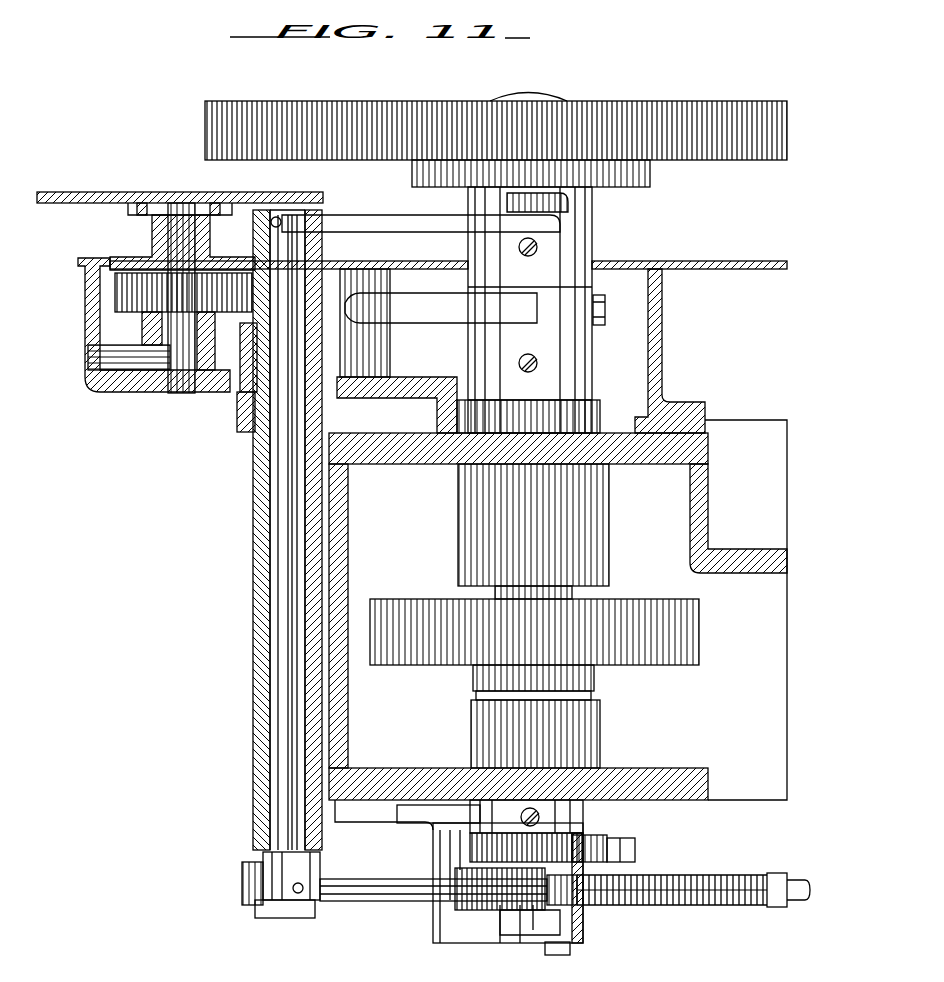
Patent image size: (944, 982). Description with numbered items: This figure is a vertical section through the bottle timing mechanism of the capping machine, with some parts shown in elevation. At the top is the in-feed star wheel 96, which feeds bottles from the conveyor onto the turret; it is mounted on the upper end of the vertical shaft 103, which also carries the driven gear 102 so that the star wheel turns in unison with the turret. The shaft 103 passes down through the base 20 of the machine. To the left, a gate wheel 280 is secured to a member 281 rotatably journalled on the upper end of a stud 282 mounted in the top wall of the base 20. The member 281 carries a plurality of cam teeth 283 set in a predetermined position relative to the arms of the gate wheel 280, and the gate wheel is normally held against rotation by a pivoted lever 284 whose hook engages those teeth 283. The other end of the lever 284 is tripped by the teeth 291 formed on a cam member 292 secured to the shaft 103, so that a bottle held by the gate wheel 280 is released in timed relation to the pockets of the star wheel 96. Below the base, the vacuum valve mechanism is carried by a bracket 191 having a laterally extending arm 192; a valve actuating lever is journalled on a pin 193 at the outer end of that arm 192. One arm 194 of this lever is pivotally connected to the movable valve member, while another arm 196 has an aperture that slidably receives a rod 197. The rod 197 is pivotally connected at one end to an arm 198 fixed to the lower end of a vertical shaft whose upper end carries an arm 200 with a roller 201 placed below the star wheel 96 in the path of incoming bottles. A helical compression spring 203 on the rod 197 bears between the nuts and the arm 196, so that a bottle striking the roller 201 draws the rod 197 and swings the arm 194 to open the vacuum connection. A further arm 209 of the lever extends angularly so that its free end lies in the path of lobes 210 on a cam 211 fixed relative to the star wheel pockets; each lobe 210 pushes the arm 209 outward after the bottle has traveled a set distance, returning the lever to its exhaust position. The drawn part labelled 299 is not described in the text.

The base 20 is at (120, 390).
The in-feed star wheel 96 is at (745, 152).
The driven gear 102 is at (699, 616).
The shaft 103 is at (583, 597).
The bracket 191 is at (372, 822).
The arm 192 is at (510, 940).
The pin 193 is at (557, 955).
The arm 194 is at (468, 872).
The arm 196 is at (560, 918).
The rod 197 is at (372, 900).
The arm 198 is at (242, 890).
The arm 200 is at (375, 222).
The roller 201 is at (572, 203).
The helical compression spring 203 is at (690, 875).
The arm 209 is at (637, 850).
The lobes 210 is at (598, 840).
The cam 211 is at (586, 822).
The gate wheel 280 is at (108, 192).
The member 281 is at (152, 236).
The stud 282 is at (196, 240).
The cam teeth 283 is at (120, 303).
The lever 284 is at (410, 300).
The teeth 291 is at (605, 306).
The cam member 292 is at (593, 360).
The shaft 299 is at (268, 576).